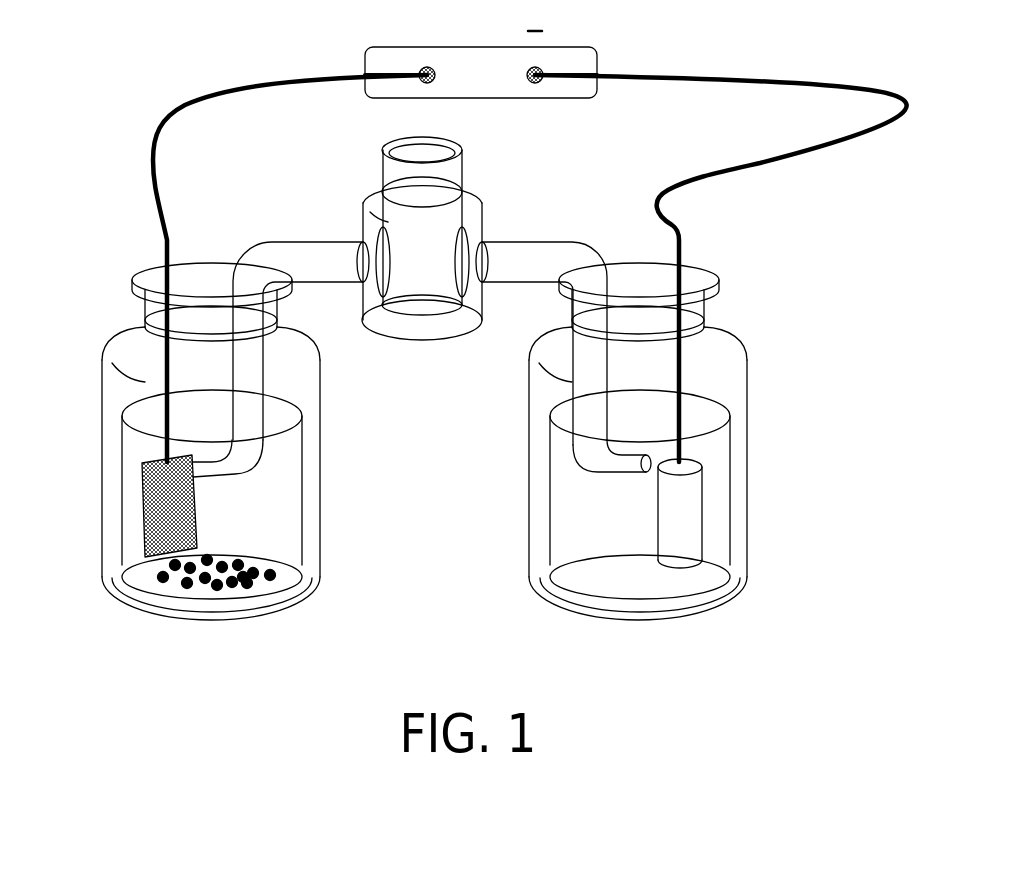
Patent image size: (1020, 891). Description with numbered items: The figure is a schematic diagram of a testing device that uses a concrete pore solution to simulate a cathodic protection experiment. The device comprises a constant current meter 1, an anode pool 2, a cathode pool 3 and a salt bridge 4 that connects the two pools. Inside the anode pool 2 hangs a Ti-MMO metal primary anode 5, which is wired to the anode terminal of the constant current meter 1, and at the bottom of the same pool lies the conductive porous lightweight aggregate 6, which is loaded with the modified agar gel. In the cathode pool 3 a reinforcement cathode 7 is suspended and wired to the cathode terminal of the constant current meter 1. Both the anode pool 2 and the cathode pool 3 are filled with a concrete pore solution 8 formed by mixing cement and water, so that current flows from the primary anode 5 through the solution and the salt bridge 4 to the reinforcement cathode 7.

The constant current meter 1 is at (488, 90).
The anode pool 2 is at (108, 480).
The cathode pool 3 is at (738, 475).
The salt bridge 4 is at (413, 347).
The Ti-MMO metal primary anode 5 is at (205, 537).
The conductive porous lightweight aggregate 6 is at (152, 580).
The reinforcement cathode 7 is at (707, 543).
The concrete pore solution 8 is at (573, 517).